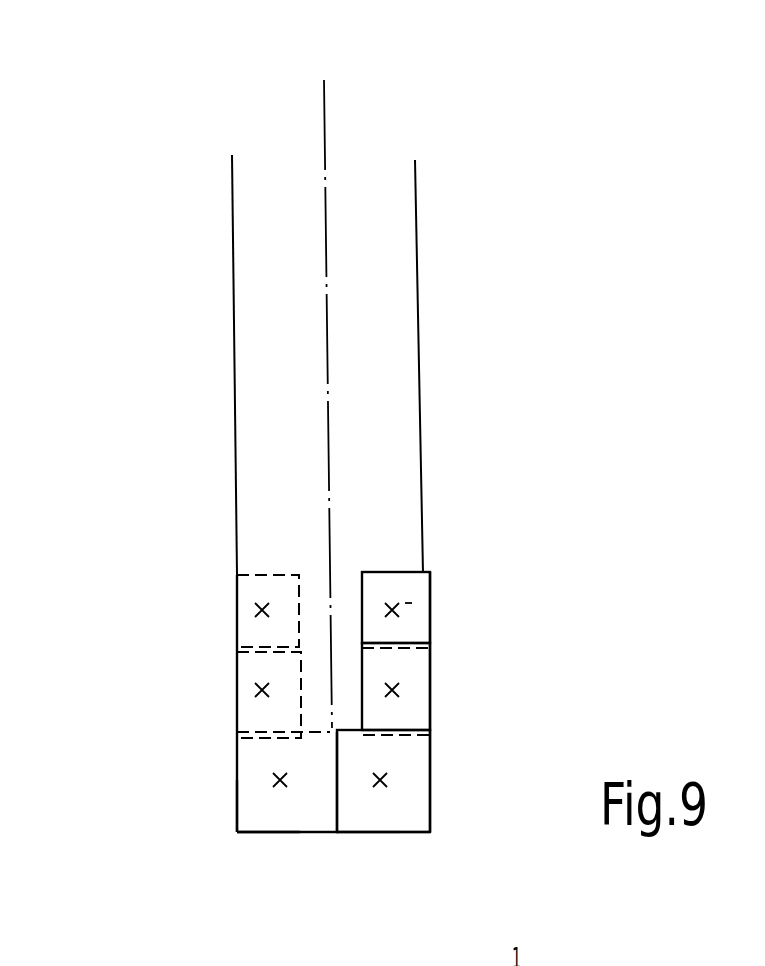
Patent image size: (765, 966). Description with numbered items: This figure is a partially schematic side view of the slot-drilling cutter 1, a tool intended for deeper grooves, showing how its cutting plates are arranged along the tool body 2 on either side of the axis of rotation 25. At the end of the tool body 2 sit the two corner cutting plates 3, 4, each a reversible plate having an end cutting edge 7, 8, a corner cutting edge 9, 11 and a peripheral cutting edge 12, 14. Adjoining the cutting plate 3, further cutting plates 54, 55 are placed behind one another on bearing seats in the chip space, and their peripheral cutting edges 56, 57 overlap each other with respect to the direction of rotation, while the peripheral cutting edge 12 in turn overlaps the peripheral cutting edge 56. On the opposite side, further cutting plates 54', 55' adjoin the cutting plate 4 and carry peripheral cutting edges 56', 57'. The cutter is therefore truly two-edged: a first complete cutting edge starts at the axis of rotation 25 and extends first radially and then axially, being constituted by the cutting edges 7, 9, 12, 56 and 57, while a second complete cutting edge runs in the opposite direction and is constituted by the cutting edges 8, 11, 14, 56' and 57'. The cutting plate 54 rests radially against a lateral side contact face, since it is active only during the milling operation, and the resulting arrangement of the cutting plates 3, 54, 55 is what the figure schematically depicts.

The slot-drilling cutter 1 is at (522, 210).
The tool body 2 is at (388, 383).
The cutting plate 3 is at (408, 798).
The cutting plate 4 is at (257, 808).
The end cutting edge 7 is at (383, 832).
The end cutting edge 8 is at (285, 832).
The corner cutting edge 9 is at (432, 830).
The corner cutting edge 11 is at (237, 832).
The peripheral cutting edge 12 is at (433, 758).
The peripheral cutting edge 14 is at (233, 775).
The axis of rotation 25 is at (324, 103).
The cutting plate 54 is at (451, 686).
The cutting plate 55 is at (464, 547).
The peripheral cutting edge 56 is at (518, 666).
The peripheral cutting edge 57 is at (482, 607).
The cutting plate 54' is at (224, 698).
The cutting plate 55' is at (218, 622).
The peripheral cutting edge 56' is at (138, 689).
The peripheral cutting edge 57' is at (161, 611).